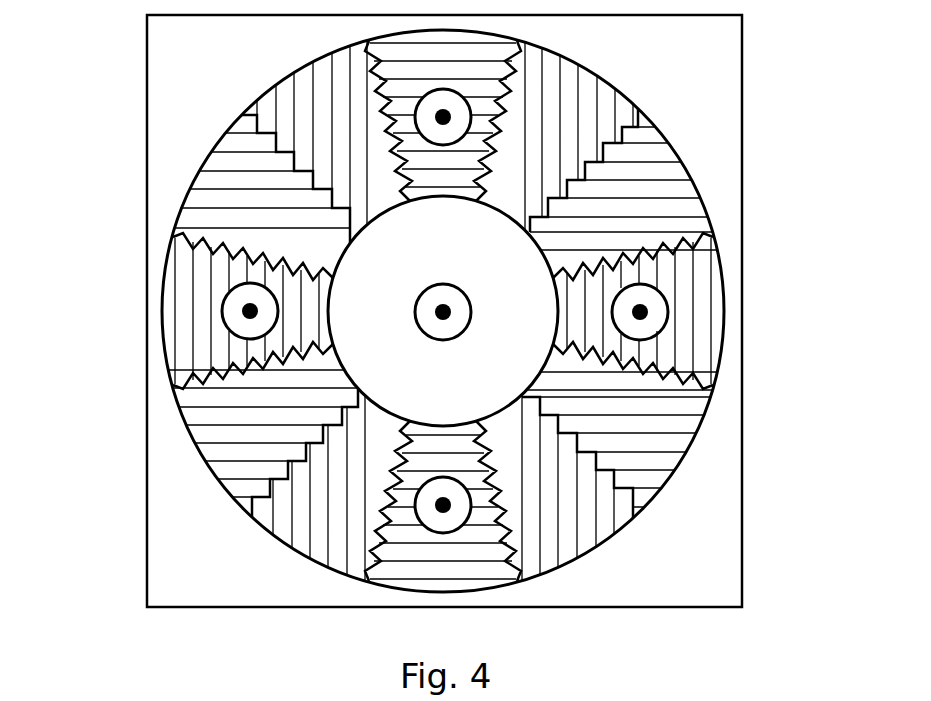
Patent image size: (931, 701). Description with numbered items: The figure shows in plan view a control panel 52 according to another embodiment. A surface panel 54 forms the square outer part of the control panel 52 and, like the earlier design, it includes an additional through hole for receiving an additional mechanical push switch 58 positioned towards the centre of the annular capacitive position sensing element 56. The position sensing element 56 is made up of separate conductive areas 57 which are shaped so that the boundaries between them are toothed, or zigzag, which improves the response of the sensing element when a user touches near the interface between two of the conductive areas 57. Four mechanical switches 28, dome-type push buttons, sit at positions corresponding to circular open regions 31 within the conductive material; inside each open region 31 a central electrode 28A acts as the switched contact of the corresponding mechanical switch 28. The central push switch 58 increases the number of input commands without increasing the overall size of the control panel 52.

The control panel 52 is at (752, 66).
The surface panel 54 is at (202, 62).
The capacitive position sensing element 56 is at (355, 142).
The conductive areas 57 is at (282, 541).
The additional mechanical push switch 58 is at (443, 342).
The mechanical switches 28 is at (235, 342).
The central electrode 28A is at (243, 302).
The open regions 31 is at (250, 292).